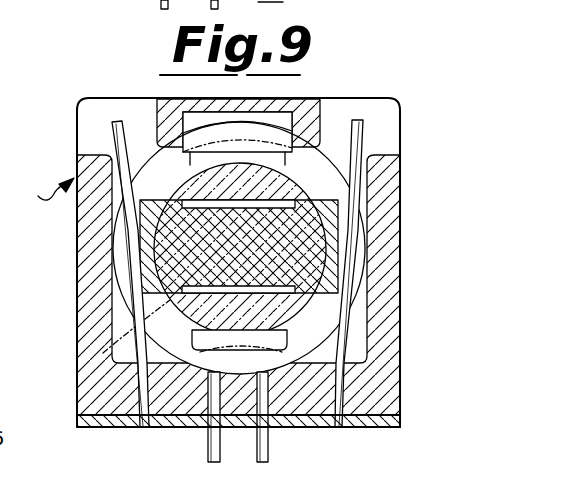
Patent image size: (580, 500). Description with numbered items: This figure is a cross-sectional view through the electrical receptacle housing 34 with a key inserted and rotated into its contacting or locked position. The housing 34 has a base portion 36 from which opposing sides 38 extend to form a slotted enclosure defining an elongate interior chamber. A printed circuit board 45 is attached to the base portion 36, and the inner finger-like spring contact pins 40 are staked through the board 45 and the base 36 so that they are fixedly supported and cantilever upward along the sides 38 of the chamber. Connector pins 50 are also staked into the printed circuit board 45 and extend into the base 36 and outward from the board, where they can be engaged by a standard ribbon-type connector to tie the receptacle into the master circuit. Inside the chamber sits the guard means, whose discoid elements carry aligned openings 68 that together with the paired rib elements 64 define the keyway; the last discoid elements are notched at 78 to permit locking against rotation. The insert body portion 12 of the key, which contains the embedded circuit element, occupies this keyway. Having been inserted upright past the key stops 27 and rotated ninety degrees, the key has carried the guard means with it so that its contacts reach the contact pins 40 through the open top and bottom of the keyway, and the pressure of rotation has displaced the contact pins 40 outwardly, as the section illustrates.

The insert body portion 12 is at (112, 122).
The key stops 27 is at (0, 181).
The receptacle housing 34 is at (42, 193).
The base portion 36 is at (357, 428).
The opposing sides 38 is at (78, 242).
The contact pins 40 is at (113, 136).
The printed circuit board 45 is at (120, 428).
The connector pins 50 is at (262, 462).
The rib elements 64 is at (170, 297).
The aligned openings 68 is at (262, 355).
The notch 78 is at (233, 167).